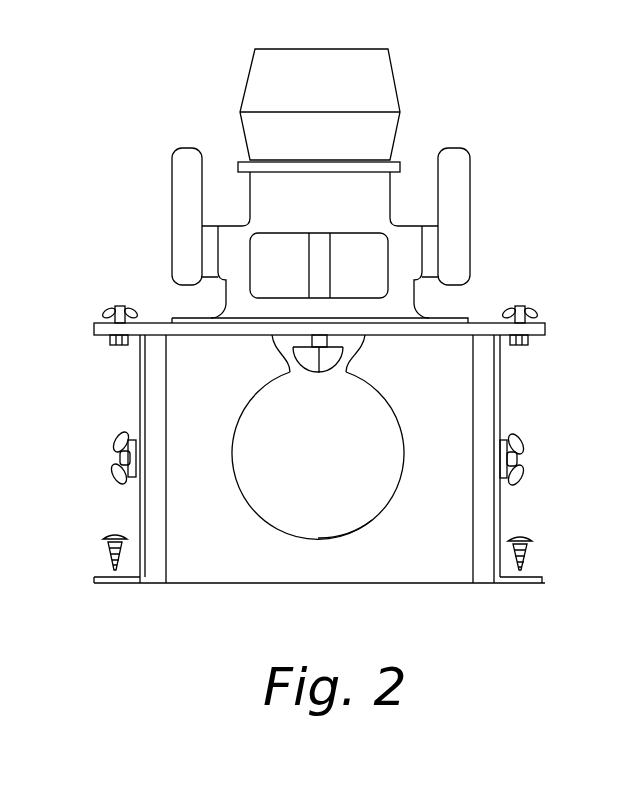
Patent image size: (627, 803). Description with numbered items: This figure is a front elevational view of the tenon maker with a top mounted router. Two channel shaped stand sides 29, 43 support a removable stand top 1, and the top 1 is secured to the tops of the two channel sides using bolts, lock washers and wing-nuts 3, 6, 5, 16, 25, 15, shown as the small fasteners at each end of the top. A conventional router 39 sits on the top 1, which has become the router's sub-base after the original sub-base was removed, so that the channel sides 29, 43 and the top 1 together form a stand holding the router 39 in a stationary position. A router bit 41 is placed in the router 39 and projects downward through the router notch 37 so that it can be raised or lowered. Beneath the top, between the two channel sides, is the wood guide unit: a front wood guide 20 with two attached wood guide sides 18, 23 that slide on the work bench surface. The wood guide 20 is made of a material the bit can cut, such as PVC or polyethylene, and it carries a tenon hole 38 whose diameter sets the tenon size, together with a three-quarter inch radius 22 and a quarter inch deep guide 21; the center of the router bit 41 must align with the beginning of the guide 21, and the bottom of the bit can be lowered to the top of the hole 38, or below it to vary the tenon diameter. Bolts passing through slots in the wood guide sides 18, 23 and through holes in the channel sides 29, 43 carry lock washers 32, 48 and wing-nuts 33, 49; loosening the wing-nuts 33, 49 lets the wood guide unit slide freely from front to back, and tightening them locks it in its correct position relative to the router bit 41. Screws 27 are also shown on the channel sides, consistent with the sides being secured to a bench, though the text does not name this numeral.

The stand top 1 is at (157, 322).
The bolt 3 is at (118, 306).
The lock washer 5 is at (110, 319).
The wing-nut 6 is at (108, 311).
The wing-nut 15 is at (533, 310).
The lock washer 16 is at (538, 319).
The wood guide side 18 is at (485, 578).
The wood guide 20 is at (233, 572).
The quarter-inch guide 21 is at (360, 528).
The three-quarter-inch radius 22 is at (446, 459).
The wood guide side 23 is at (152, 583).
The bolt 25 is at (520, 306).
The screw 27 is at (528, 555).
The channel shaped stand side 29 is at (503, 368).
The lock washer 32 is at (508, 438).
The wing-nut 33 is at (525, 473).
The router notch 37 is at (283, 347).
The tenon hole 38 is at (298, 455).
The router 39 is at (308, 97).
The router bit 41 is at (330, 355).
The channel side 43 is at (115, 583).
The lock washer 48 is at (137, 438).
The wing-nut 49 is at (115, 470).